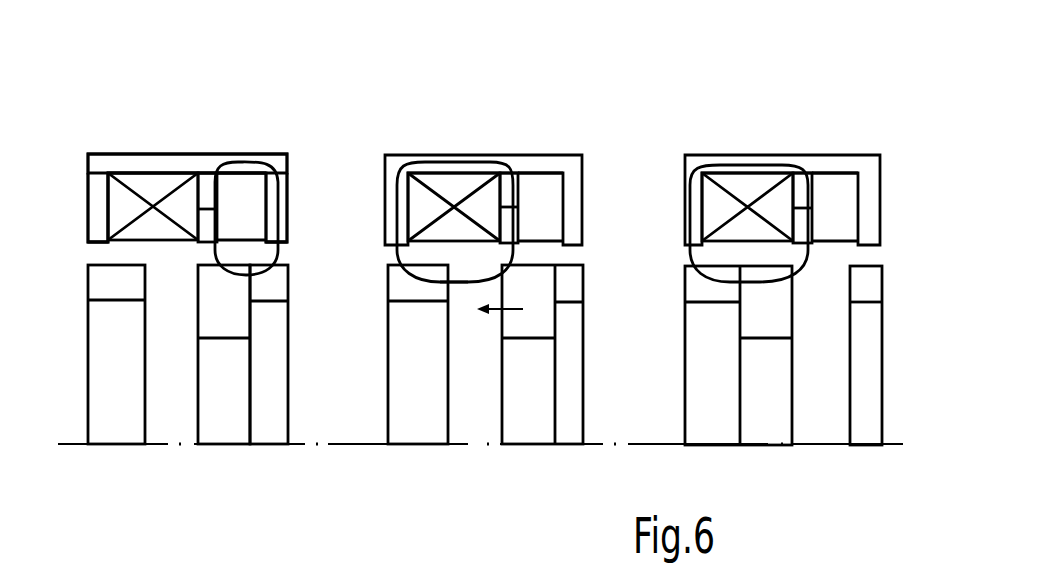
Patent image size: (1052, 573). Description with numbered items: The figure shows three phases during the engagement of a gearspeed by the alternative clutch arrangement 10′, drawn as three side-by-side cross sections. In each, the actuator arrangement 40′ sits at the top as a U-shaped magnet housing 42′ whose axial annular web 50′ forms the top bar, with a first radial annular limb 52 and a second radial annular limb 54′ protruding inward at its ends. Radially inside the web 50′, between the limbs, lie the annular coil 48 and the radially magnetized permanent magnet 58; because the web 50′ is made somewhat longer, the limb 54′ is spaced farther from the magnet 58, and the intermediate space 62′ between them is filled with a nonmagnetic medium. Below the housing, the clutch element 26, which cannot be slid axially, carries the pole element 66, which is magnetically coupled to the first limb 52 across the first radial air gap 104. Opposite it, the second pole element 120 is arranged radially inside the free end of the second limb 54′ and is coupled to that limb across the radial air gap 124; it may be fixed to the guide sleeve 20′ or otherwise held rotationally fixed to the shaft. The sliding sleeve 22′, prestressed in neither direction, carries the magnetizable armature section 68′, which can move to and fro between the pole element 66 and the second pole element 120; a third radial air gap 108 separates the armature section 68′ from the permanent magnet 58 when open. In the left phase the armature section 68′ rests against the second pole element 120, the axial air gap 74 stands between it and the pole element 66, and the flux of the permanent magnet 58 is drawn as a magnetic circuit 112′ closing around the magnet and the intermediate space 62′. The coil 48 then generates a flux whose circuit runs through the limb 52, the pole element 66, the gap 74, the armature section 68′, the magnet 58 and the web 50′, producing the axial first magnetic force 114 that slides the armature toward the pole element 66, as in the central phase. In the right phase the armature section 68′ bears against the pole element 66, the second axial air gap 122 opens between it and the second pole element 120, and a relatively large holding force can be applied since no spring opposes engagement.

The clutch arrangement 10′ is at (288, 101).
The actuator arrangement 40′ is at (122, 112).
The magnet housing 42′ is at (88, 154).
The axial annular web 50′ is at (184, 154).
The first radial annular limb 52 is at (90, 210).
The second radial annular limb 54′ is at (287, 220).
The first radial air gap 104 is at (97, 248).
The radial air gap 124 is at (282, 255).
The annular coil 48 is at (113, 197).
The permanent magnet 58 is at (213, 173).
The intermediate space 62′ is at (245, 188).
The magnetic flux path 112′ is at (282, 173).
The clutch element 26 is at (118, 423).
The pole element 66 is at (100, 285).
The axial air gap 74 is at (183, 309).
The sliding sleeve 22′ is at (223, 423).
The right pillar outer part 20′ is at (275, 423).
The armature section 68′ is at (230, 319).
The second pole element 120 is at (273, 283).
The first magnetic force 114 is at (512, 307).
The third radial air gap 108 is at (503, 255).
The second axial air gap 122 is at (838, 332).